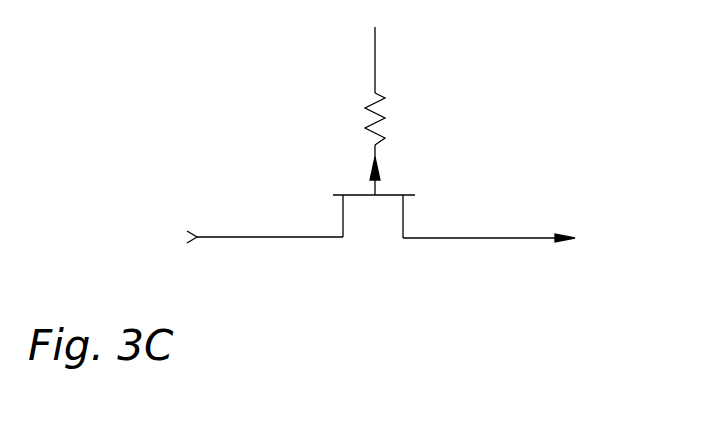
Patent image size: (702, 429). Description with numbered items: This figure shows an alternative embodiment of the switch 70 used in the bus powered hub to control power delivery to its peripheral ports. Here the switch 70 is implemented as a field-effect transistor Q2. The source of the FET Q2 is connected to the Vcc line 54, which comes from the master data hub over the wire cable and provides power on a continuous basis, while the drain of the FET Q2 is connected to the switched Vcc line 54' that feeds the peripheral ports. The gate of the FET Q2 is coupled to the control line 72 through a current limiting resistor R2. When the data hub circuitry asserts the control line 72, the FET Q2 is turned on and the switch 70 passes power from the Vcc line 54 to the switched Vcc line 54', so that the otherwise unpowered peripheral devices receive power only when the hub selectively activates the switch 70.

The control line 72 is at (375, 62).
The switch 70 is at (365, 258).
The field-effect transistor Q2 is at (395, 195).
The current limiting resistor R2 is at (390, 119).
The Vcc line 54 is at (265, 246).
The switched Vcc line 54' is at (489, 269).